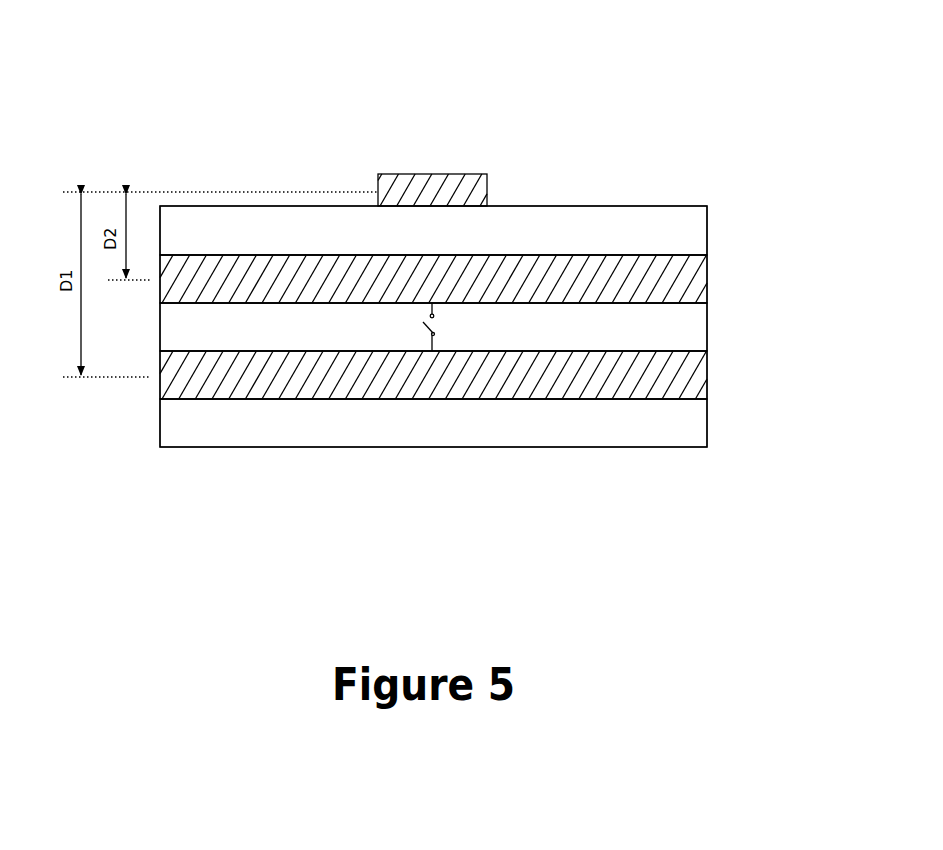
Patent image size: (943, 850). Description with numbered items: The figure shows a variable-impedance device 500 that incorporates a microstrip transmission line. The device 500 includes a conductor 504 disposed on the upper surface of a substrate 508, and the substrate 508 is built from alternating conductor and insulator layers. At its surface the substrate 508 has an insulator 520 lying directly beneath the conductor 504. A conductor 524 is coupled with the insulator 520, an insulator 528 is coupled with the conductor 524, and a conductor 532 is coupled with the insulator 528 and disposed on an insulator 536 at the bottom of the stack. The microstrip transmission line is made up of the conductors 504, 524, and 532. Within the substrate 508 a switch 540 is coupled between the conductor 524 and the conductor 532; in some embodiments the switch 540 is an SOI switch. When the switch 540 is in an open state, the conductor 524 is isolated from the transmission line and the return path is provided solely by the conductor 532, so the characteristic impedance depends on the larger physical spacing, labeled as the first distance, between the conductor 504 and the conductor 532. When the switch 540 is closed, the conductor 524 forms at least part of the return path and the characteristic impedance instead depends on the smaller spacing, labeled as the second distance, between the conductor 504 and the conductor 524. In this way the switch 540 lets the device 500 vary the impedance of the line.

The device 500 is at (110, 58).
The conductor 504 is at (387, 173).
The substrate 508 is at (703, 182).
The insulator 520 is at (708, 228).
The conductor 524 is at (708, 268).
The insulator 528 is at (708, 325).
The conductor 532 is at (708, 370).
The insulator 536 is at (708, 423).
The switch 540 is at (405, 321).